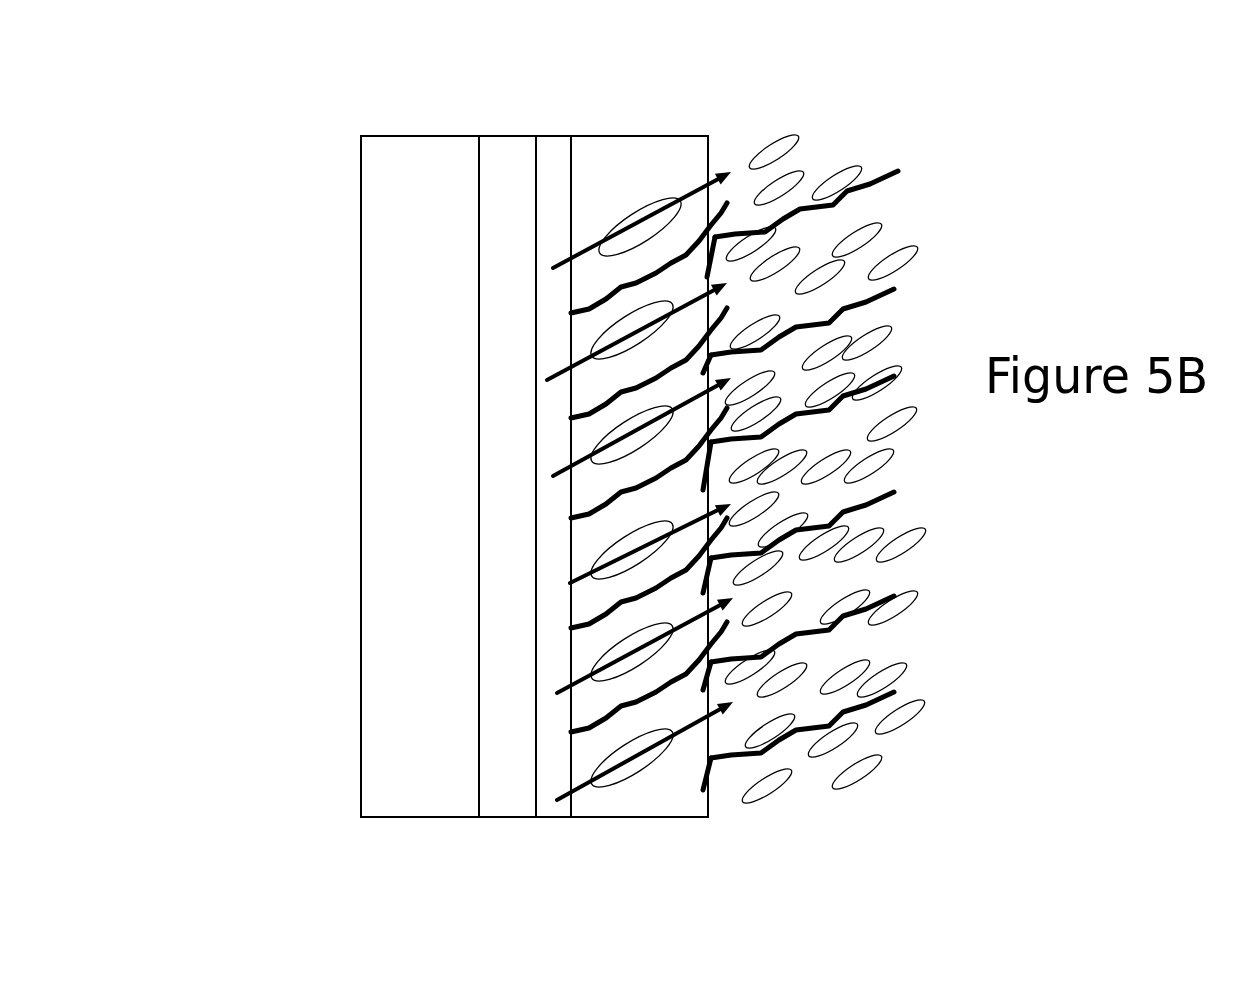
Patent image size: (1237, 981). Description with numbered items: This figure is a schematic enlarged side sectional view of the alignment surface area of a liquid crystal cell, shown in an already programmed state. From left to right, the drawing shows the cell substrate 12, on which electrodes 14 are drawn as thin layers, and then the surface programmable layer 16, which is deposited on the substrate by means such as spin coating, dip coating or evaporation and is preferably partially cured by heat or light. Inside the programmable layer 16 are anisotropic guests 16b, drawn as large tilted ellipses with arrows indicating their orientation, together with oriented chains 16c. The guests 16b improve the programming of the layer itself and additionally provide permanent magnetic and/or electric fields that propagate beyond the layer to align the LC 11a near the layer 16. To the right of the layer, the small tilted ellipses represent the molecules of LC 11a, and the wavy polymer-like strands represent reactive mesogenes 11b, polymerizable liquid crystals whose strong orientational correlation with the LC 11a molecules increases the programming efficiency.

The cell substrate 12 is at (343, 293).
The electrodes 14 is at (512, 130).
The programmable layer 16 is at (655, 133).
The guests 16b is at (658, 193).
The oriented chains 16c is at (565, 625).
The reactive mesogenes 11b is at (898, 182).
The LC 11a is at (917, 427).